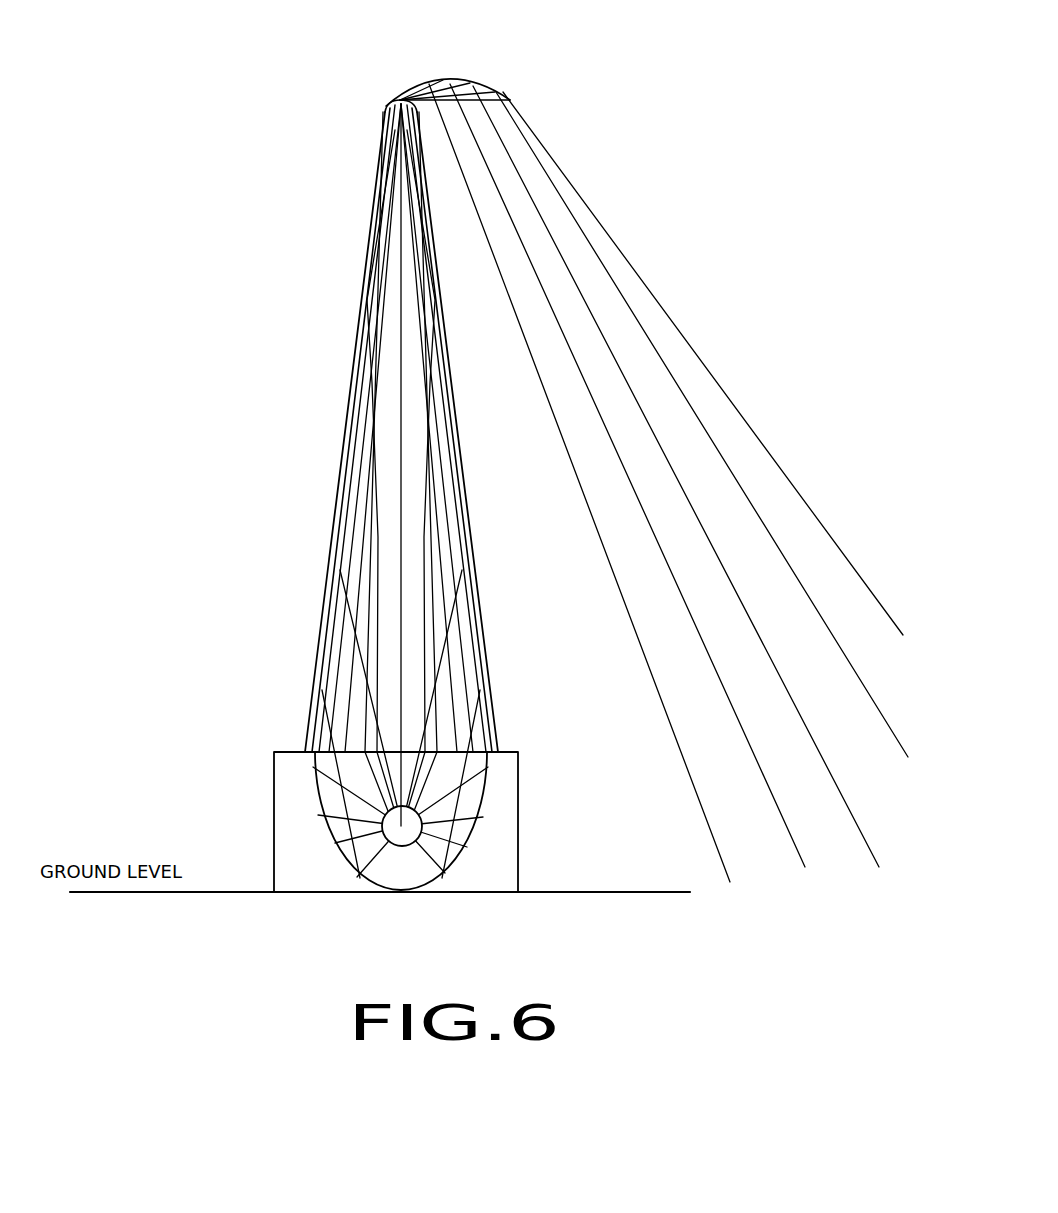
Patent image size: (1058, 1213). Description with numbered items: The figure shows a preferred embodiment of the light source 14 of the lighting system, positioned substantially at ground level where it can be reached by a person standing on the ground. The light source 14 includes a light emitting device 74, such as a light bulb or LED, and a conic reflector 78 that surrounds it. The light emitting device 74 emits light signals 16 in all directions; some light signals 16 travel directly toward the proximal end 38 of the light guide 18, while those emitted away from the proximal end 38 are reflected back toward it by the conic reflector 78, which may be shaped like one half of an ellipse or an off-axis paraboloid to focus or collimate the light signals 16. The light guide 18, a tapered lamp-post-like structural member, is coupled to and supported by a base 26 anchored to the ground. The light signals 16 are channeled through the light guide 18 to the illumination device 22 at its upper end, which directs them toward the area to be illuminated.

The light source 14 is at (315, 858).
The light signals 16 is at (703, 362).
The light guide 18 is at (331, 538).
The illumination device 22 is at (507, 100).
The base 26 is at (520, 853).
The proximal end 38 is at (487, 732).
The light emitting device 74 is at (397, 822).
The conic reflector 78 is at (320, 815).